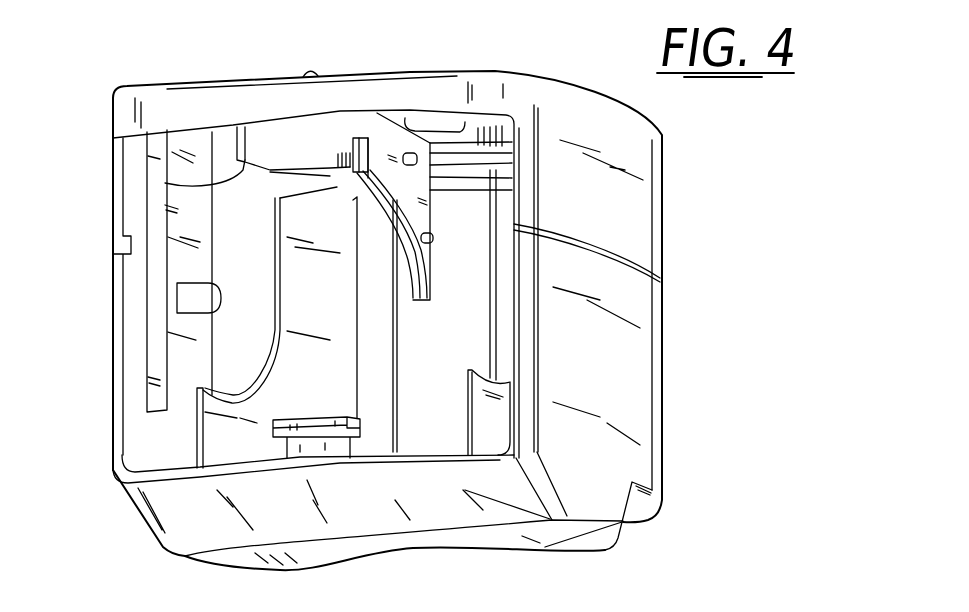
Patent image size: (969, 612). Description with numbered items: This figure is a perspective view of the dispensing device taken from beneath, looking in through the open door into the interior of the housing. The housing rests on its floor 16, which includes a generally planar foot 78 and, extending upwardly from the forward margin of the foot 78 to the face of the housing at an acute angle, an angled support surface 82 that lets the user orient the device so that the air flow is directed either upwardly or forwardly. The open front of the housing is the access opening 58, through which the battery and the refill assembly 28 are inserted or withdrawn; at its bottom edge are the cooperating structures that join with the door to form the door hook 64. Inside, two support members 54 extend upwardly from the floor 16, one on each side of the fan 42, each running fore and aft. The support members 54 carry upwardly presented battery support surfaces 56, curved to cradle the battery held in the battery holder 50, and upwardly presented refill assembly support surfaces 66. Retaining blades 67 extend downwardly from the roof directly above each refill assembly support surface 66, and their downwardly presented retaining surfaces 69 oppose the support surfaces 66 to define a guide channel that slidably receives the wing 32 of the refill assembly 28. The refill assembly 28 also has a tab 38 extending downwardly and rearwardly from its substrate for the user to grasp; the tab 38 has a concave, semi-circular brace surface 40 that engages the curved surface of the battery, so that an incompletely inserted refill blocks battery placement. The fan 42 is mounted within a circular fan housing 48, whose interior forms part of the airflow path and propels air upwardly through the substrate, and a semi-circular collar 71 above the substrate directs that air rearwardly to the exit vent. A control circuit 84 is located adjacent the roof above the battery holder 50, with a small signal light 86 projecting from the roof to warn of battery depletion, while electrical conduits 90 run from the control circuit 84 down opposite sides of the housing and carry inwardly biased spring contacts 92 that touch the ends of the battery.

The floor 16 is at (534, 548).
The refill assembly 28 is at (488, 147).
The wing 32 is at (330, 167).
The tab 38 is at (350, 152).
The brace surface 40 is at (390, 210).
The fan 42 is at (483, 208).
The fan housing 48 is at (477, 292).
The battery holder 50 is at (267, 360).
The support members 54 is at (234, 427).
The battery support surfaces 56 is at (213, 383).
The access opening 58 is at (183, 484).
The door hook 64 is at (323, 435).
The refill assembly support surfaces 66 is at (337, 187).
The retaining blades 67 is at (257, 138).
The retaining surfaces 69 is at (165, 183).
The semi-circular collar 71 is at (477, 135).
The foot 78 is at (568, 550).
The angled support surface 82 is at (623, 521).
The control circuit 84 is at (473, 132).
The signal light 86 is at (313, 69).
The electrical conduits 90 is at (190, 257).
The spring contacts 92 is at (197, 300).